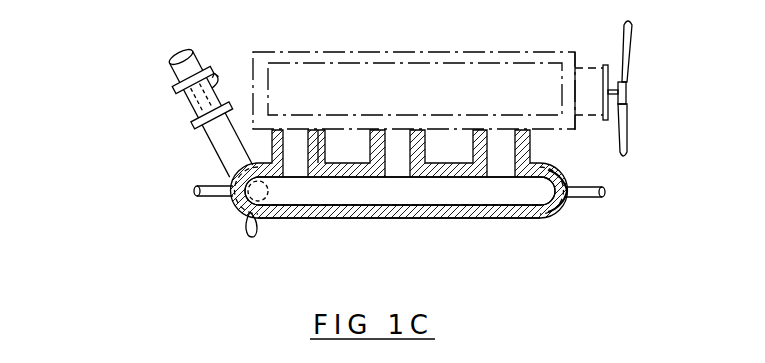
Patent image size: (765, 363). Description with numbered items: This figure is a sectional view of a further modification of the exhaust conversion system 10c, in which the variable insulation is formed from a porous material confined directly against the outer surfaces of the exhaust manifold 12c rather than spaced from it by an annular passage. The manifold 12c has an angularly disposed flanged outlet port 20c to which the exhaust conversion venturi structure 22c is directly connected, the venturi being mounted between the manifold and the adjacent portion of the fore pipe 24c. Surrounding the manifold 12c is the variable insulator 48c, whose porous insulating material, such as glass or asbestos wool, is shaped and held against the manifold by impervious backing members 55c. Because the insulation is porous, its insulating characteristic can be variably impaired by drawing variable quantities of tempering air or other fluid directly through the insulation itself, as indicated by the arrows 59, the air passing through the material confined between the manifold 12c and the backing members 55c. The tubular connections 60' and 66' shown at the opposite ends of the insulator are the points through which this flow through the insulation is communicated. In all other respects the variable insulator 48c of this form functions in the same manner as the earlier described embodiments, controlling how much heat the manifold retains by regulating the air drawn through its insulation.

The exhaust conversion system 10c is at (218, 205).
The exhaust manifold 12c is at (491, 195).
The flanged outlet port 20c is at (213, 138).
The exhaust conversion venturi structure 22c is at (192, 98).
The fore pipe 24c is at (203, 73).
The variable insulator 48c is at (421, 212).
The impervious backing member 55c is at (323, 222).
The arrows 59 is at (592, 172).
The outlet tube 60' is at (612, 213).
The inlet tube 66' is at (206, 224).